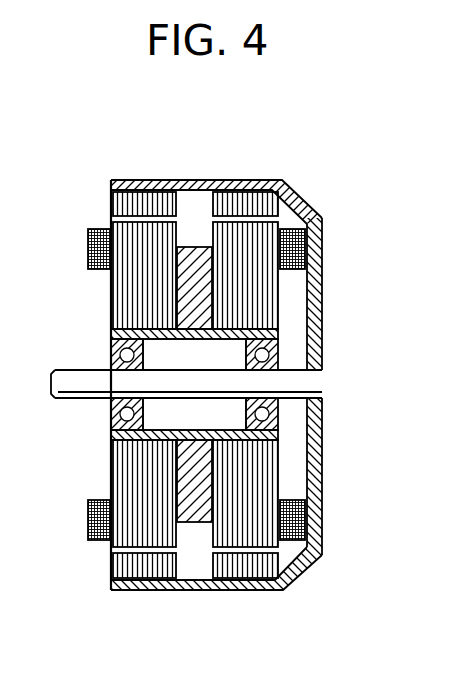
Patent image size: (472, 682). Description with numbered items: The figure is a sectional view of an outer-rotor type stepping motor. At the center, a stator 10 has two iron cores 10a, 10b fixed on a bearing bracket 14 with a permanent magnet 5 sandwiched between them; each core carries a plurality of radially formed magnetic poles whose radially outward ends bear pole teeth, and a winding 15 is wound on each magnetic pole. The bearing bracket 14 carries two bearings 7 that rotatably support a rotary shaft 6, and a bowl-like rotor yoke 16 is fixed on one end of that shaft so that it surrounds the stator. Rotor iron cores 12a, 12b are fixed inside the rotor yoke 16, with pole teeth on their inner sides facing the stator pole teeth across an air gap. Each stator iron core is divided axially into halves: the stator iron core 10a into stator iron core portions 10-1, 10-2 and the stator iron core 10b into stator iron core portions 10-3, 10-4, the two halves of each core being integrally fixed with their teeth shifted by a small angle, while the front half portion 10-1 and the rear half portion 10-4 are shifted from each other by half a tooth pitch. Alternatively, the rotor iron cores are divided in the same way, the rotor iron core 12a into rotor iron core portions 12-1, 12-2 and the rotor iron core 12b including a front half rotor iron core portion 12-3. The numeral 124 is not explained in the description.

The permanent magnet 5 is at (197, 256).
The rotary shaft 6 is at (77, 400).
The bearing 7 is at (110, 363).
The stator 10 is at (198, 566).
The stator iron core 10a is at (122, 292).
The stator iron core 10b is at (270, 302).
The stator iron core portion 10-1 is at (122, 590).
The stator iron core portion 10-2 is at (165, 590).
The stator iron core portion 10-3 is at (229, 556).
The stator iron core portion 10-4 is at (292, 570).
The rotor iron core 12a is at (138, 182).
The rotor iron core 12b is at (250, 180).
The rotor iron core portion 12-1 is at (122, 194).
The rotor iron core portion 12-2 is at (167, 197).
The rotor iron core portion 12-3 is at (232, 204).
The yoke opening 124 is at (271, 188).
The bearing bracket 14 is at (112, 339).
The winding 15 is at (88, 243).
The rotor yoke 16 is at (308, 208).